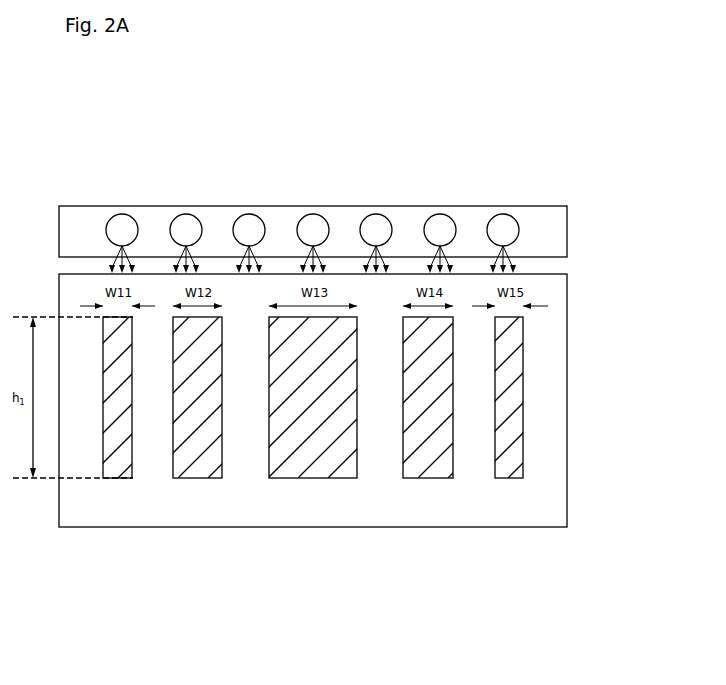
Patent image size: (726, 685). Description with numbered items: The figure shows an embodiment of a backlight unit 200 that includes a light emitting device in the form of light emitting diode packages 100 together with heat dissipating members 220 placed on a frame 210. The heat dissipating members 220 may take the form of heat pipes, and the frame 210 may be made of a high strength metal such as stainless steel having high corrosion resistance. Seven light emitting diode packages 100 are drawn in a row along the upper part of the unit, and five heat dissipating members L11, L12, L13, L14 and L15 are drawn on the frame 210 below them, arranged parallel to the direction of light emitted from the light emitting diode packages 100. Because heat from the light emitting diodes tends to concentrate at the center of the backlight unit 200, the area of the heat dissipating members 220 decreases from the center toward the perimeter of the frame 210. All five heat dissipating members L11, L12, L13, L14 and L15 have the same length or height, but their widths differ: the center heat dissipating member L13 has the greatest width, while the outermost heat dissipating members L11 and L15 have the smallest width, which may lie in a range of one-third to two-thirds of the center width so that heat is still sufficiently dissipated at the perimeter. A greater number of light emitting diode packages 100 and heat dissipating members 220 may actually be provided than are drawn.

The light emitting diode package 100 is at (313, 233).
The backlight unit 200 is at (417, 183).
The frame 210 is at (557, 365).
The heat dissipating members 220 is at (349, 485).
The outermost heat dissipating member L11 is at (116, 478).
The heat dissipating member L12 is at (196, 478).
The center heat dissipating member L13 is at (312, 478).
The heat dissipating member L14 is at (426, 478).
The outermost heat dissipating member L15 is at (118, 605).